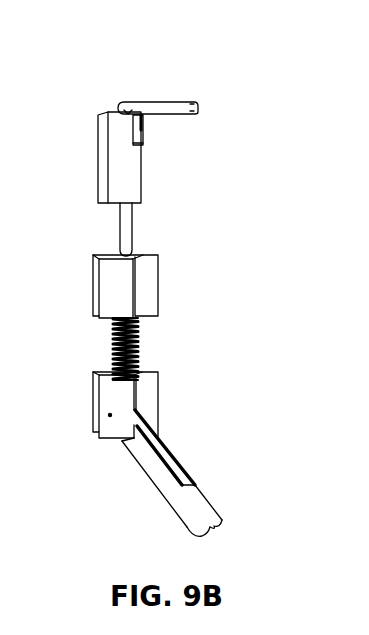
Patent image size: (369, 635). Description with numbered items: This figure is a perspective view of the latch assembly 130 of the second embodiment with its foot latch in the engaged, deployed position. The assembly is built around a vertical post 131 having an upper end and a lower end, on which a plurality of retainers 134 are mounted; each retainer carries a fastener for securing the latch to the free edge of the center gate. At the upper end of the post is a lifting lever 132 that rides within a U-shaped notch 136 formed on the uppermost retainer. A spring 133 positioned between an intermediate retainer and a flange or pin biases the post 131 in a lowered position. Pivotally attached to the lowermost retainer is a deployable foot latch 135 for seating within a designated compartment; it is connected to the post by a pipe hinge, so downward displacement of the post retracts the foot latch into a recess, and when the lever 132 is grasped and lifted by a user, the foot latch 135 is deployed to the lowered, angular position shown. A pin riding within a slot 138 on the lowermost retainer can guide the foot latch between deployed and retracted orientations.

The latch assembly 130 is at (120, 53).
The post 131 is at (133, 230).
The lifting lever 132 is at (198, 104).
The spring 133 is at (138, 338).
The retainers 134 is at (118, 168).
The deployable foot latch 135 is at (198, 502).
The U-shaped notch 136 is at (140, 134).
The slot 138 is at (110, 418).